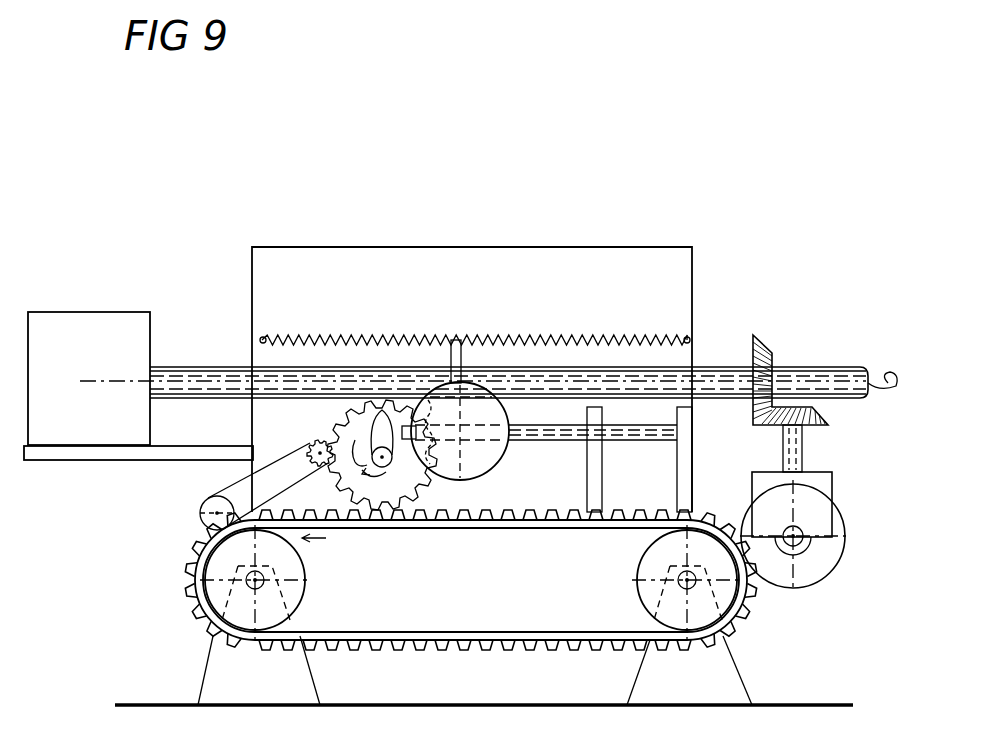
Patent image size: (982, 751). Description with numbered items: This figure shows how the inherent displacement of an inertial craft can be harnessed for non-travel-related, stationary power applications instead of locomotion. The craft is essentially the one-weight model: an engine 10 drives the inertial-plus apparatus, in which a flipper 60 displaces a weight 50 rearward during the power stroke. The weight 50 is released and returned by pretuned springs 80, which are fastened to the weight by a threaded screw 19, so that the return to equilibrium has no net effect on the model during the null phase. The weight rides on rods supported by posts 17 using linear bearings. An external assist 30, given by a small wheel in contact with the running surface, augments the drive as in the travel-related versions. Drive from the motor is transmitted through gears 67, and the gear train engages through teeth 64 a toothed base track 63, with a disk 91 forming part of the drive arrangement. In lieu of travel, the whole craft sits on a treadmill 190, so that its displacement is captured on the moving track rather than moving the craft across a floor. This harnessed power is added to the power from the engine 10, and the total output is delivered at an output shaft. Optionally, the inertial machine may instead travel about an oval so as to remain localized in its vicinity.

The engine 10 is at (100, 311).
The posts 17 is at (666, 479).
The threaded screw 19 is at (455, 340).
The external assist 30 is at (198, 508).
The weight 50 is at (498, 487).
The flipper 60 is at (345, 425).
The base track 63 is at (527, 518).
The teeth 64 is at (404, 470).
The gears 67 is at (756, 340).
The pretuned springs 80 is at (347, 340).
The disk 91 is at (814, 586).
The treadmill 190 is at (380, 635).